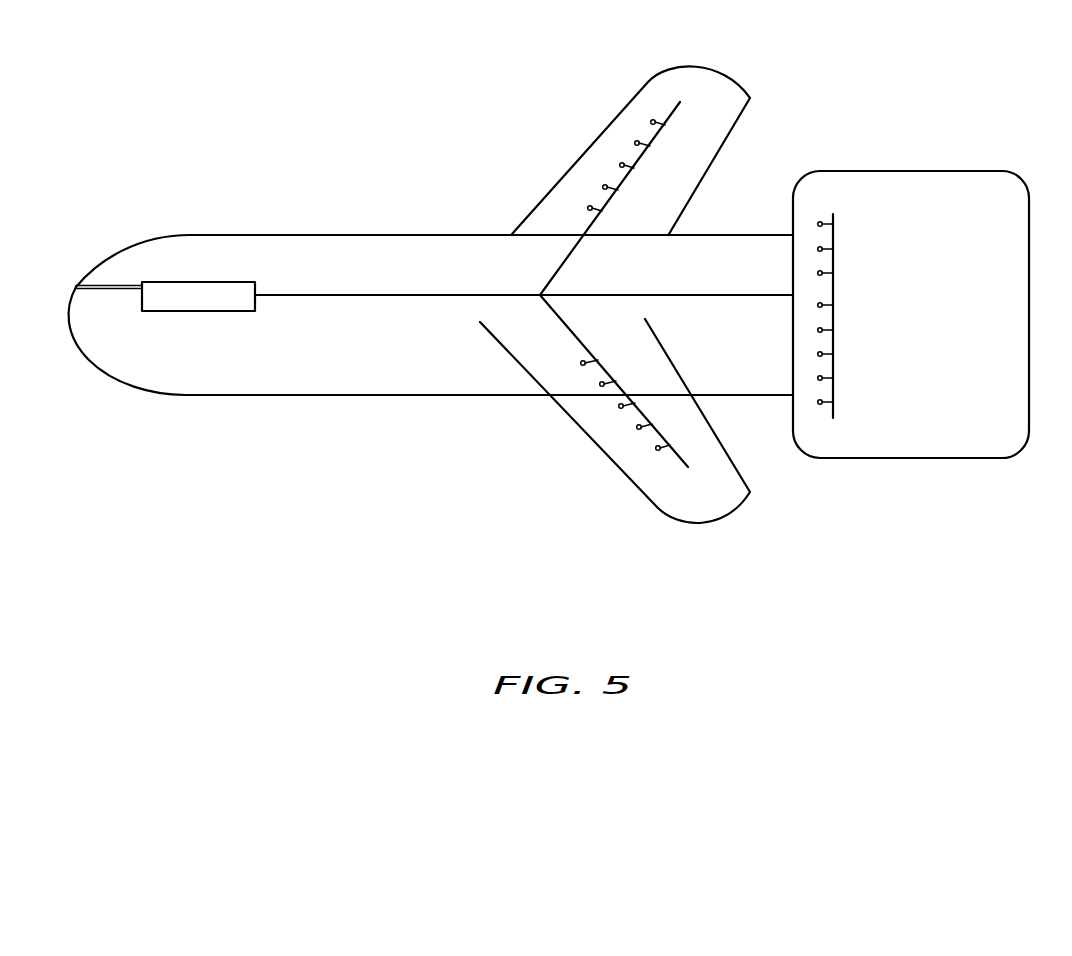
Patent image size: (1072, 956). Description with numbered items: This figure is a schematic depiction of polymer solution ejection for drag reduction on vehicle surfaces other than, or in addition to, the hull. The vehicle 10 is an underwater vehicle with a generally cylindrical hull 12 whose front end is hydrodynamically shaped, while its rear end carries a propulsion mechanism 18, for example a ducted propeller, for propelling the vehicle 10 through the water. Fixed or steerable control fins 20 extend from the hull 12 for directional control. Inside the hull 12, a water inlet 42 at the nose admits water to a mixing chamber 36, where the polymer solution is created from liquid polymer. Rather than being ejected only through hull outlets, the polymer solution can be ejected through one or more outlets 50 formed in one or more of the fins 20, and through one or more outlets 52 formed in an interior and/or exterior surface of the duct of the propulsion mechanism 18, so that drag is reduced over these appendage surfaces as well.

The vehicle 10 is at (428, 294).
The hull 12 is at (290, 396).
The propulsion mechanism 18 is at (935, 472).
The control fins 20 is at (732, 97).
The mixing chamber 36 is at (222, 281).
The water inlet 42 is at (76, 287).
The outlets 50 is at (605, 185).
The outlets 52 is at (820, 222).